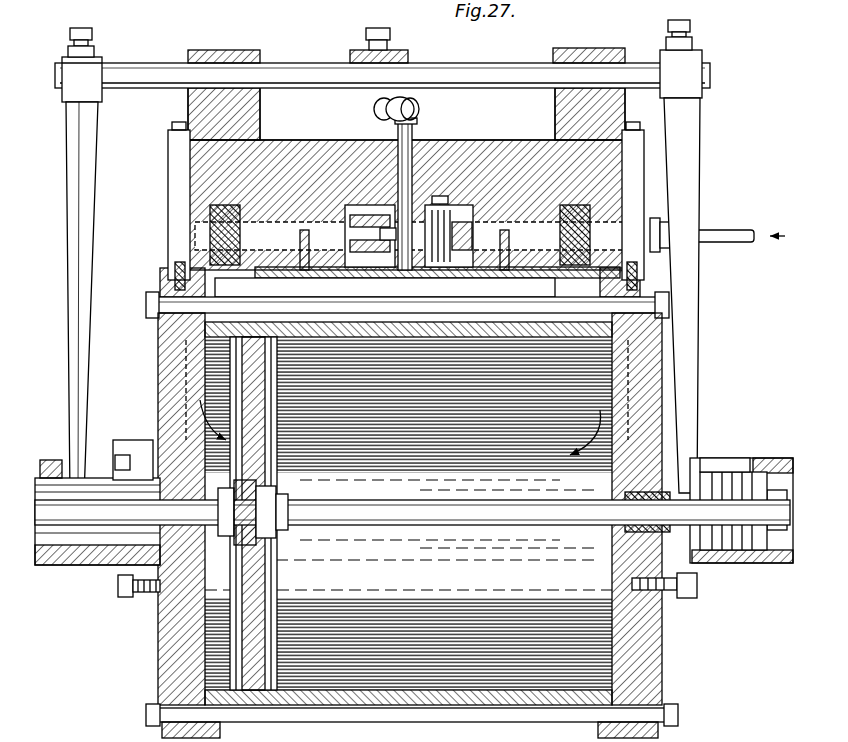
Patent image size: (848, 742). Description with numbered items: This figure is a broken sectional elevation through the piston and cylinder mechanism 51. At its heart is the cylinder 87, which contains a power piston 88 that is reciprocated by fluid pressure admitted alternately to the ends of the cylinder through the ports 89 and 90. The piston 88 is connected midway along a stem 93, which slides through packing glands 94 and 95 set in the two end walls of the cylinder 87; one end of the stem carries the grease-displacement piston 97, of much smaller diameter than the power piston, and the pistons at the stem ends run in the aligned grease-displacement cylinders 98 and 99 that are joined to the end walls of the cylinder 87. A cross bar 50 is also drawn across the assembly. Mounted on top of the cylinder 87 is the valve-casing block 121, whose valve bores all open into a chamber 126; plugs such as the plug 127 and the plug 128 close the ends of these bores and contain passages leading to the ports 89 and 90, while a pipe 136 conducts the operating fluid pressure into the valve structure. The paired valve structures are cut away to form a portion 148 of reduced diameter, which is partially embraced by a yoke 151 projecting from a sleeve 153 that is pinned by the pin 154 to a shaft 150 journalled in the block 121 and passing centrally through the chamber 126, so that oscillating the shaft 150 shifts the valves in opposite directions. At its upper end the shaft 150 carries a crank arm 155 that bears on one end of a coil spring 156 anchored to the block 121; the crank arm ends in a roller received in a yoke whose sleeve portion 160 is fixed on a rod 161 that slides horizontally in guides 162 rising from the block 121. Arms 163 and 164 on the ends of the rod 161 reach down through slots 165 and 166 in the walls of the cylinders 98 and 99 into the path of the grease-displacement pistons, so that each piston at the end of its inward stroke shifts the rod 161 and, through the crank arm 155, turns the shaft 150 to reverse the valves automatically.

The cross bar 50 is at (452, 306).
The piston and cylinder mechanism 51 is at (662, 630).
The cylinder 87 is at (175, 648).
The power piston 88 is at (268, 610).
The port 89 is at (190, 340).
The port 90 is at (627, 334).
The stem 93 is at (66, 514).
The packing gland 94 is at (180, 490).
The packing gland 95 is at (645, 490).
The grease-displacement piston 97 is at (738, 546).
The grease-displacement cylinder 98 is at (50, 470).
The grease-displacement cylinder 99 is at (775, 555).
The valve-casing block 121 is at (505, 152).
The chamber 126 is at (355, 212).
The plug 127 is at (178, 238).
The plug 128 is at (642, 216).
The pipe 136 is at (745, 228).
The portion of reduced diameter 148 is at (458, 215).
The shaft 150 is at (416, 124).
The yoke 151 is at (440, 198).
The sleeve 153 is at (392, 206).
The pin 154 is at (388, 228).
The crank arm 155 is at (385, 130).
The coil spring 156 is at (372, 109).
The sleeve portion 160 is at (400, 52).
The rod 161 is at (297, 63).
The guide 162 is at (218, 50).
The arm 163 is at (86, 136).
The arm 164 is at (690, 136).
The slot 165 is at (94, 462).
The slot 166 is at (718, 458).